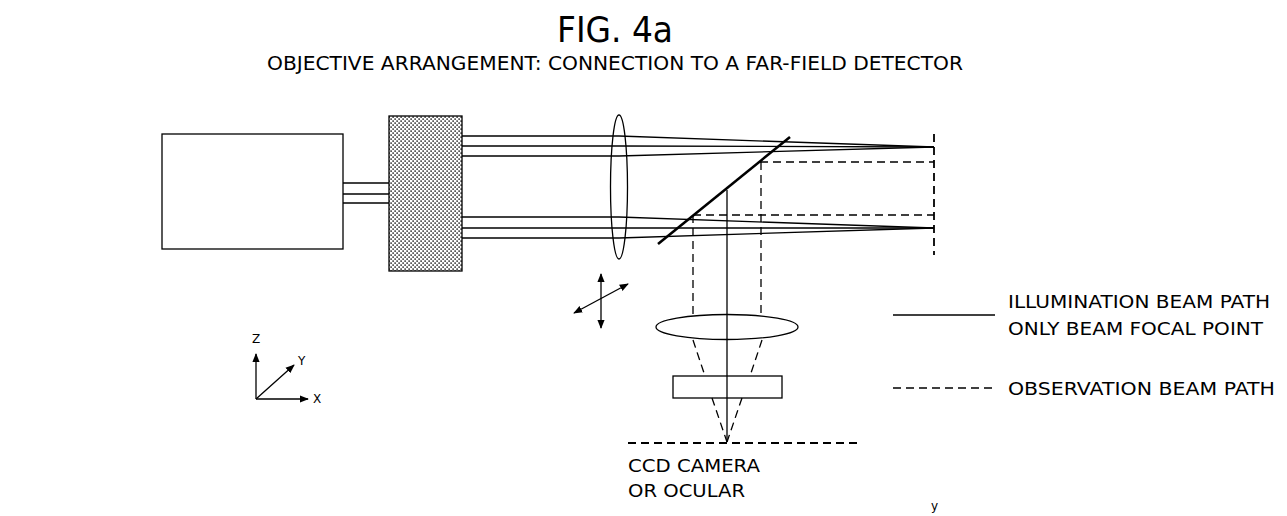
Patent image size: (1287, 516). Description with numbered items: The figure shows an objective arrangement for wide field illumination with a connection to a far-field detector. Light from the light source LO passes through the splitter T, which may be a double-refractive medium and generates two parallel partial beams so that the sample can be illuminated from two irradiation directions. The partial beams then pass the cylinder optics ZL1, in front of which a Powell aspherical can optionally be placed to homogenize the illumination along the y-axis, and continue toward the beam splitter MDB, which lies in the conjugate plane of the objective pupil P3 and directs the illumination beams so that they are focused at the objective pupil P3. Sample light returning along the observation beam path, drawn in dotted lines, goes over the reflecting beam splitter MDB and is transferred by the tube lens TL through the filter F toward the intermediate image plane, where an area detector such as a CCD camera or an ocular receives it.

The light source LO is at (275, 208).
The splitter T is at (425, 208).
The cylinder optics ZL1 is at (623, 176).
The beam splitter MDB is at (724, 177).
The objective pupil P3 is at (934, 175).
The tube lens TL is at (745, 327).
The filter F is at (744, 389).